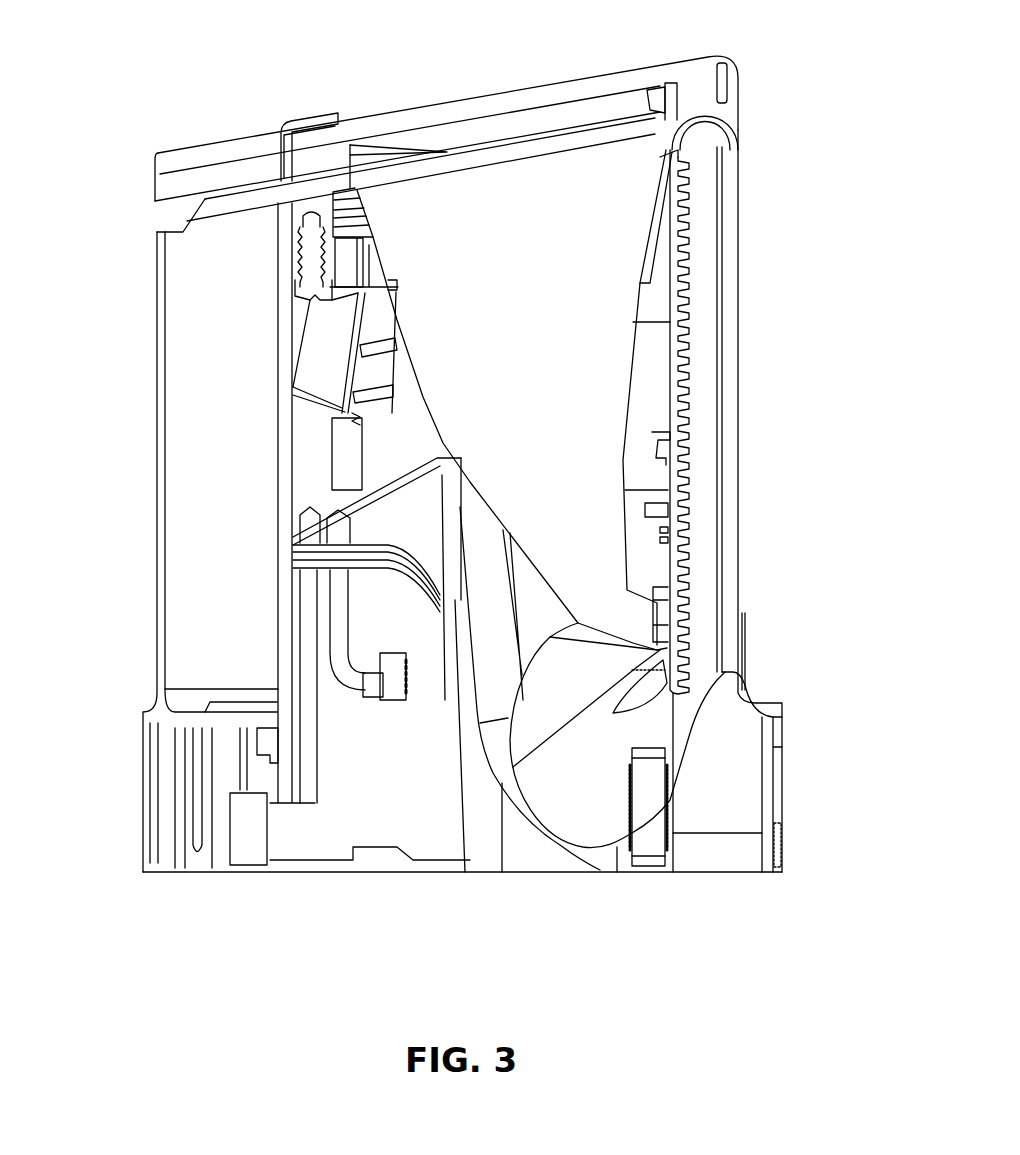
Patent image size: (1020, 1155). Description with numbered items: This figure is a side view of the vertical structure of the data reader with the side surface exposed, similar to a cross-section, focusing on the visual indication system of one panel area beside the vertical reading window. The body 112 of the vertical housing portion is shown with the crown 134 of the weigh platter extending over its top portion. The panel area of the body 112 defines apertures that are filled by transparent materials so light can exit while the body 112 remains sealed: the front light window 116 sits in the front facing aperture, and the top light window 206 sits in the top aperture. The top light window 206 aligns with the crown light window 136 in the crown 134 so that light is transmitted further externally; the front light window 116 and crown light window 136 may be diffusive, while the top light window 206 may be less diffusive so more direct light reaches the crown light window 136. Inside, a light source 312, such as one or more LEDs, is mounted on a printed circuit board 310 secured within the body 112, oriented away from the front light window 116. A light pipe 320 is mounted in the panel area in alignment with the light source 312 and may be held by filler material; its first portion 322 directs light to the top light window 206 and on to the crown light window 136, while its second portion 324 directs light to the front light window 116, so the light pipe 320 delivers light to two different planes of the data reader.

The body 112 is at (183, 527).
The front light window 116 is at (730, 185).
The crown 134 is at (178, 173).
The crown light window 136 is at (450, 108).
The top light window 206 is at (603, 140).
The printed circuit board 310 is at (667, 563).
The light source 312 is at (667, 622).
The light pipe 320 is at (537, 422).
The first portion 322 is at (605, 272).
The second portion 324 is at (710, 500).